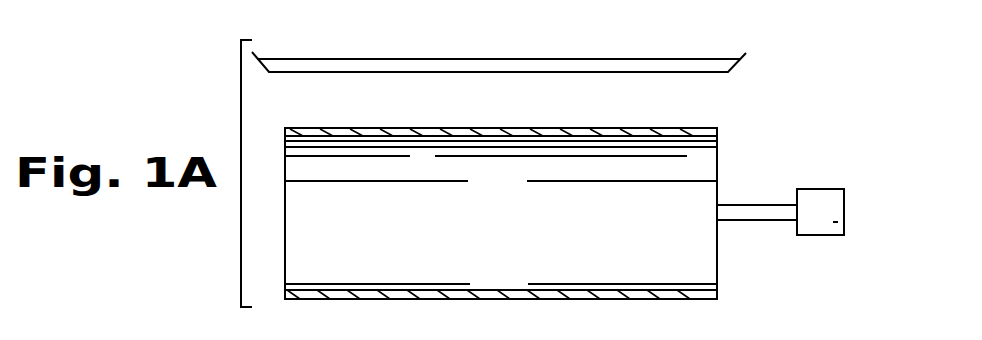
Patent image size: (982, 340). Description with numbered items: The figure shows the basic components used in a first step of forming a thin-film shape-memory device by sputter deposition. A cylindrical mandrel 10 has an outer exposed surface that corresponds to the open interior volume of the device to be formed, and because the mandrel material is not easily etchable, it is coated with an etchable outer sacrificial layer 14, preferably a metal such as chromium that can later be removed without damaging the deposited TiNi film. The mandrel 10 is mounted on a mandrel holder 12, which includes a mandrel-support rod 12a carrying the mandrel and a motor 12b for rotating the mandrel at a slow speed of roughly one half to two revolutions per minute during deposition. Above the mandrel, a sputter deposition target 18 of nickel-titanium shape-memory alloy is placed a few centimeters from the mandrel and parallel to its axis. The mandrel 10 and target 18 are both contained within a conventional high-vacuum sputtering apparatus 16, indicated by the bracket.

The mandrel 10 is at (697, 264).
The mandrel holder 12 is at (810, 212).
The mandrel-support rod 12a is at (759, 205).
The motor 12b is at (833, 222).
The sacrificial layer 14 is at (480, 128).
The sputtering apparatus 16 is at (238, 100).
The sputter deposition target 18 is at (662, 67).